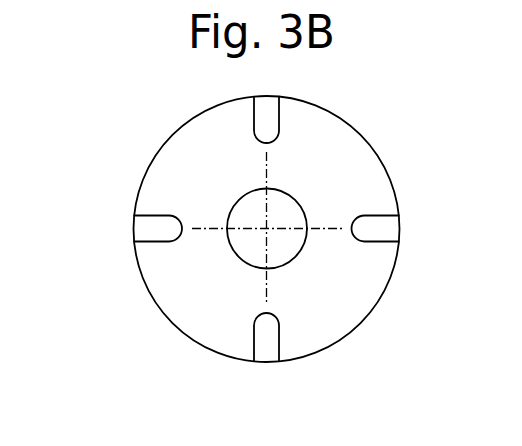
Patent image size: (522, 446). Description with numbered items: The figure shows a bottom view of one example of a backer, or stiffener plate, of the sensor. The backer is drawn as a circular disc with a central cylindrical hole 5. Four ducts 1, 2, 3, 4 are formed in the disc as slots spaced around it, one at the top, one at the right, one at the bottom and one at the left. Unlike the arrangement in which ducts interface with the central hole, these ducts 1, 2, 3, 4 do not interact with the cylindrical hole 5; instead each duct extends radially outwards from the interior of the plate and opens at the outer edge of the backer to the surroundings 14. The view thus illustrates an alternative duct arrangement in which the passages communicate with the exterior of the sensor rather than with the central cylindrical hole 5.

The surroundings 14 is at (116, 151).
The cylindrical hole 5 is at (243, 217).
The duct 1 is at (268, 122).
The duct 2 is at (385, 221).
The duct 3 is at (272, 345).
The duct 4 is at (148, 233).